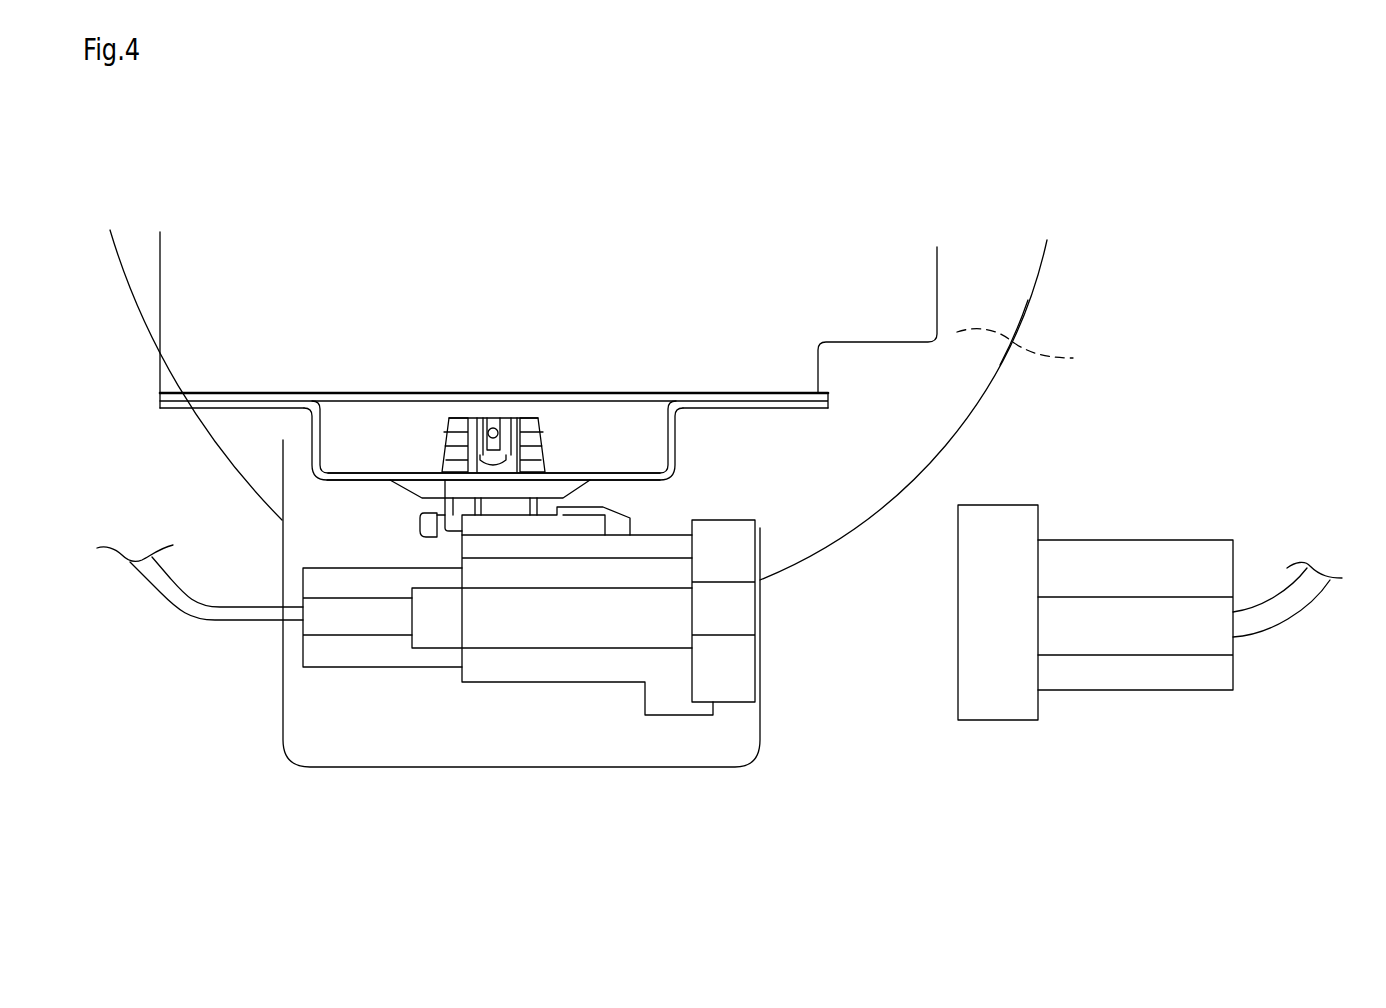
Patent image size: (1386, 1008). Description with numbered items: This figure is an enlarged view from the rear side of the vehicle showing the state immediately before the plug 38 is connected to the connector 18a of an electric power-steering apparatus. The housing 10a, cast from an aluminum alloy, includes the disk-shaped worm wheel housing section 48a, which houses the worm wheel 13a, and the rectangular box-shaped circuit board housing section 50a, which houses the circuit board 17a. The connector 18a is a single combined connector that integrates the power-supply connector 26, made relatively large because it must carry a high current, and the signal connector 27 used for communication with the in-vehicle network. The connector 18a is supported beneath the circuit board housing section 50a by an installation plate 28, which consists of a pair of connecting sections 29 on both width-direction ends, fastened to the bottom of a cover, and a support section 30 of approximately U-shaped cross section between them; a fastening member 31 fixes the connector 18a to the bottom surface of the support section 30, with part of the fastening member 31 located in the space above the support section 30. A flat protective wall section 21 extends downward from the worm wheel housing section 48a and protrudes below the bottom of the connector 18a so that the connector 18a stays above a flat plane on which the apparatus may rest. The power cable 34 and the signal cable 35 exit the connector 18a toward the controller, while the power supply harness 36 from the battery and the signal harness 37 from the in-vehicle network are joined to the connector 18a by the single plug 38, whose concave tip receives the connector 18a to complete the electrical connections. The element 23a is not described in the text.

The housing 10a is at (1010, 270).
The worm wheel housing section 48a is at (983, 308).
The worm wheel 13a is at (1039, 353).
The circuit board 17a is at (690, 310).
The installation plate 28 is at (725, 410).
The connecting sections 29 is at (238, 402).
The fixing member bent portion 23a is at (332, 395).
The support section 30 is at (627, 480).
The fastening member 31 is at (533, 418).
The circuit board housing section 50a is at (187, 280).
The protective wall section 21 is at (323, 740).
The connector 18a is at (529, 679).
The power-supply connector 26 is at (529, 679).
The signal connector 27 is at (557, 668).
The power cable 34 is at (200, 619).
The signal cable 35 is at (167, 594).
The power supply harness 36 is at (1294, 626).
The signal harness 37 is at (1255, 618).
The plug 38 is at (1078, 670).